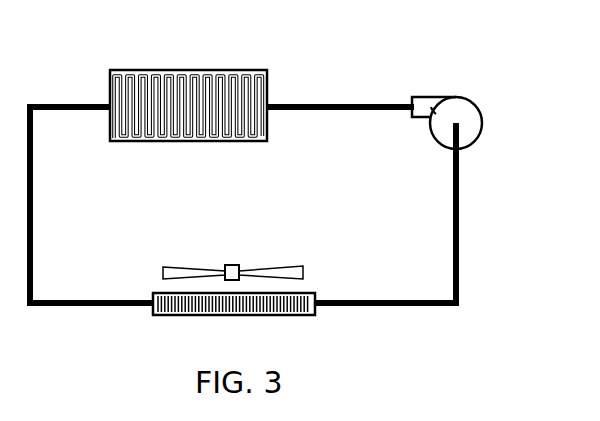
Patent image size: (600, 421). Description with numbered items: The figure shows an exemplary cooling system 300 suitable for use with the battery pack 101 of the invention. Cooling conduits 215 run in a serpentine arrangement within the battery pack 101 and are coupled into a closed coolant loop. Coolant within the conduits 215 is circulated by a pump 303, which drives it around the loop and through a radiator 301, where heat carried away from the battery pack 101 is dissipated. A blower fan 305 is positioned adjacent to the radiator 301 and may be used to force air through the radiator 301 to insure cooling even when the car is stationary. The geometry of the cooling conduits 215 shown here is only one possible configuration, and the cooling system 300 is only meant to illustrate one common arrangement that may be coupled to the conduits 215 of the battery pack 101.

The cooling system 300 is at (484, 58).
The battery pack 101 is at (157, 87).
The cooling conduits 215 is at (133, 85).
The pump 303 is at (430, 122).
The radiator 301 is at (197, 315).
The blower fan 305 is at (233, 265).